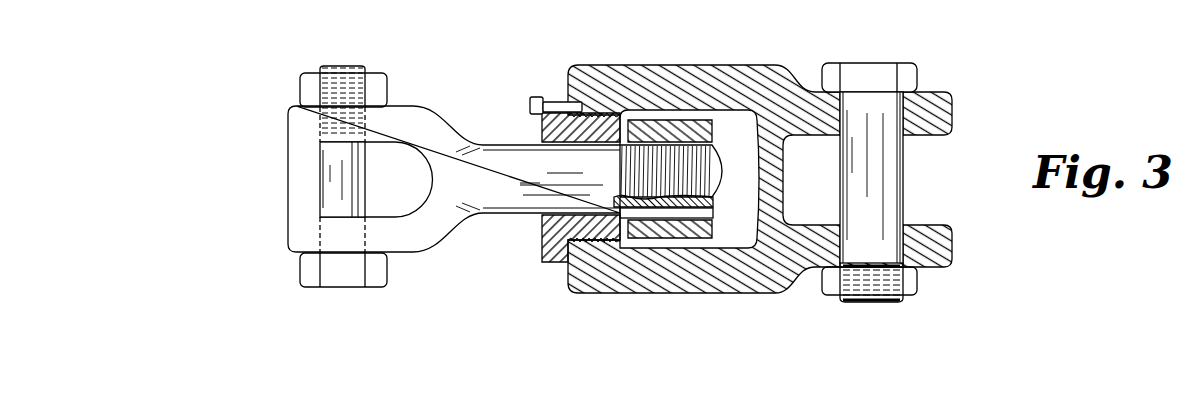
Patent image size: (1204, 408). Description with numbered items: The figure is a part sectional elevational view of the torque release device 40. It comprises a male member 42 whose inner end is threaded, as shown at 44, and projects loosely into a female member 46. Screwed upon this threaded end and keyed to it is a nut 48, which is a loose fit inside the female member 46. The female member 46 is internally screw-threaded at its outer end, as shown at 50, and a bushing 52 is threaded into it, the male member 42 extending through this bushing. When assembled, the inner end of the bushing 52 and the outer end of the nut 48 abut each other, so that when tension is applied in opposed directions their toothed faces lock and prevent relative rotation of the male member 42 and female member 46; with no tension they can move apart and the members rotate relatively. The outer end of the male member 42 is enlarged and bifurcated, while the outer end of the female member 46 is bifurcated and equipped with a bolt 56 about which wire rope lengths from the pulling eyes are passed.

The torque release device 40 is at (687, 62).
The male member 42 is at (510, 152).
The threaded inner end 44 is at (693, 170).
The female member 46 is at (755, 80).
The nut 48 is at (700, 232).
The internal screw threads 50 is at (592, 241).
The bushing 52 is at (542, 243).
The bolt 56 is at (888, 192).